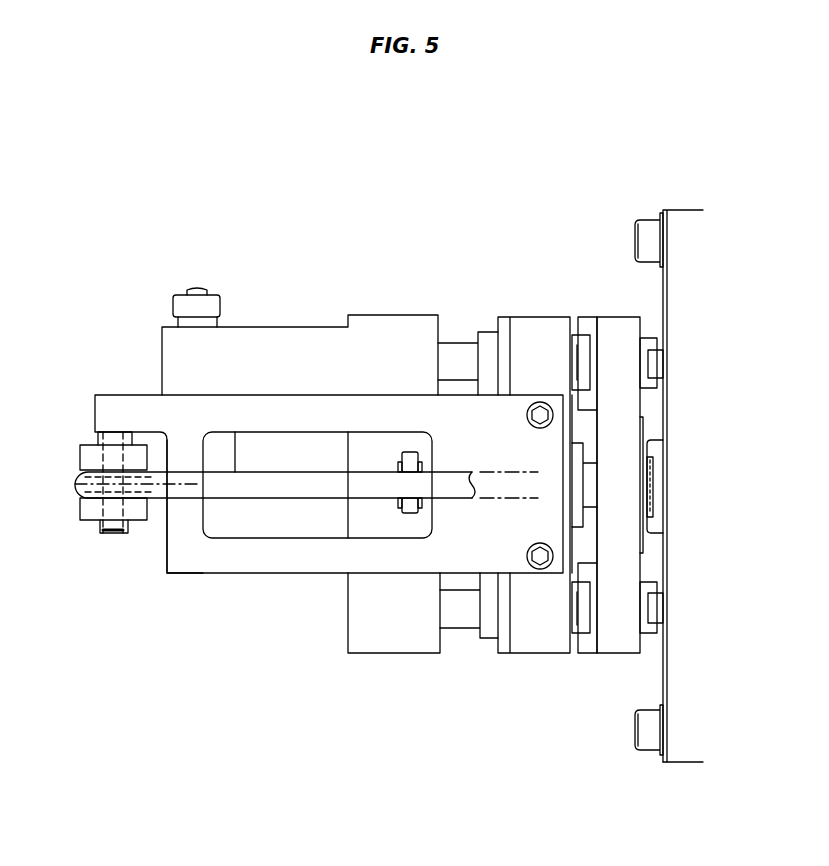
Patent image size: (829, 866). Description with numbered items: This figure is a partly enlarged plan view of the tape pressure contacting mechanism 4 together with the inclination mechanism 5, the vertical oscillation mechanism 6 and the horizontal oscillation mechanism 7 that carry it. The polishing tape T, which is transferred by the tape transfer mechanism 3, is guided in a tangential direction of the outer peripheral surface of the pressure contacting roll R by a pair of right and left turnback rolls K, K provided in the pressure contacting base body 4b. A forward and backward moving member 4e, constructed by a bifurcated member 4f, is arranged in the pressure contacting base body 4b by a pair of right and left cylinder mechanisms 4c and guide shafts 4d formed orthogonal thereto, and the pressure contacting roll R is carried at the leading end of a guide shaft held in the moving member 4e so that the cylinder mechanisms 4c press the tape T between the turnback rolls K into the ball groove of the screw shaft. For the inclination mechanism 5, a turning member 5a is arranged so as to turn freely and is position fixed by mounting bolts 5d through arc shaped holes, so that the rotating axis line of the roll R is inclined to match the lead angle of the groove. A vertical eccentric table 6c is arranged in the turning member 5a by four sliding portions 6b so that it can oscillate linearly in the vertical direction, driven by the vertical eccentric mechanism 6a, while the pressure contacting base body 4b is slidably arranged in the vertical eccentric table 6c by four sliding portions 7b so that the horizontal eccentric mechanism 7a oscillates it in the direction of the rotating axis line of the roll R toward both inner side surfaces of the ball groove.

The tape transfer mechanism 3 is at (256, 528).
The tape pressure contacting mechanism 4 is at (518, 687).
The pressure contacting base body 4b is at (179, 580).
The cylinder mechanism 4c is at (381, 523).
The guide shaft 4d is at (456, 357).
The forward and backward moving member 4e is at (408, 337).
The bifurcated member 4f is at (305, 410).
The inclination mechanism 5 is at (682, 170).
The turning member 5a is at (680, 748).
The mounting bolt 5d is at (650, 233).
The vertical oscillation mechanism 6 is at (670, 317).
The vertical eccentric mechanism 6a is at (668, 337).
The sliding portion 6b is at (652, 380).
The vertical eccentric table 6c is at (623, 558).
The horizontal oscillation mechanism 7 is at (570, 288).
The horizontal eccentric mechanism 7a is at (590, 288).
The sliding portion 7b is at (582, 342).
The turnback roll K is at (93, 458).
The pressure contacting roll R is at (90, 476).
The polishing tape T is at (300, 484).